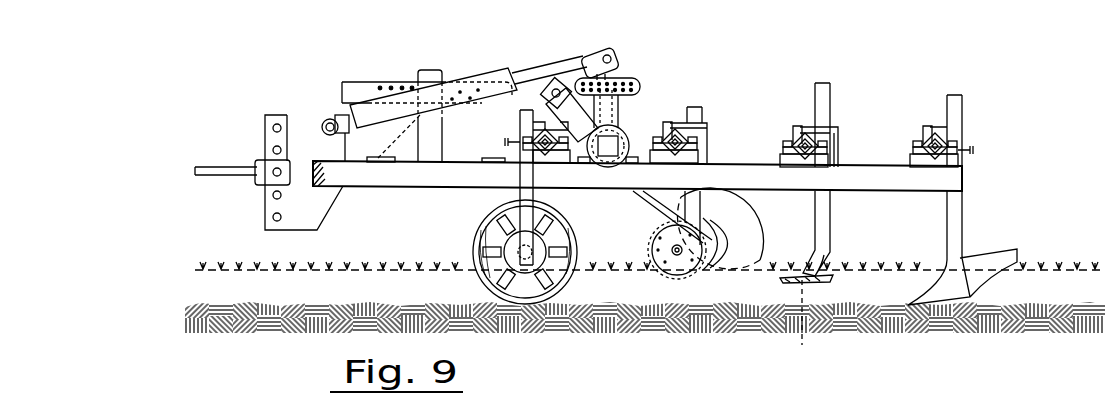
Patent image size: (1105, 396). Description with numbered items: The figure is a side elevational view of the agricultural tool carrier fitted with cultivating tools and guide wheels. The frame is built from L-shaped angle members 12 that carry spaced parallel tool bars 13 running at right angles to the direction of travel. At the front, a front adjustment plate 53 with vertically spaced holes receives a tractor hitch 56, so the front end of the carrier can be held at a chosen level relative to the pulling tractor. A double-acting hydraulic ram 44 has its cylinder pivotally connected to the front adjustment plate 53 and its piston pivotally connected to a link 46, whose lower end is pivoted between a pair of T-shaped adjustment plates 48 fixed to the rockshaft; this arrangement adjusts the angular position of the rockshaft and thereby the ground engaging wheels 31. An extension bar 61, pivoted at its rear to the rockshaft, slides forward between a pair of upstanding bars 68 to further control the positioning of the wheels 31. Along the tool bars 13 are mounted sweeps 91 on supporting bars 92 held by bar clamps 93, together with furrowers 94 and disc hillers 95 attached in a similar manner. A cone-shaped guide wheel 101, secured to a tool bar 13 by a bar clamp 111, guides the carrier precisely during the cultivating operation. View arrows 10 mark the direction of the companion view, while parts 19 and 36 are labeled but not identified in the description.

The section line indicator 10 is at (131, 75).
The L-shaped angle member 12 is at (437, 181).
The tool bar 13 is at (787, 152).
The bearing 19 is at (667, 143).
The ground engaging wheel 31 is at (764, 213).
The disc arm 36 is at (652, 193).
The hydraulic ram 44 is at (375, 119).
The link 46 is at (614, 72).
The T-shaped adjustment plate 48 is at (618, 112).
The front adjustment plate 53 is at (311, 151).
The tractor hitch 56 is at (218, 171).
The extension bar 61 is at (368, 88).
The upstanding bar 68 is at (423, 142).
The sweep 91 is at (800, 320).
The supporting bar 92 is at (830, 210).
The bar clamp 93 is at (840, 130).
The furrower 94 is at (987, 258).
The disc hiller 95 is at (660, 242).
The cone-shaped guide wheel 101 is at (478, 224).
The bar clamp 111 is at (524, 128).